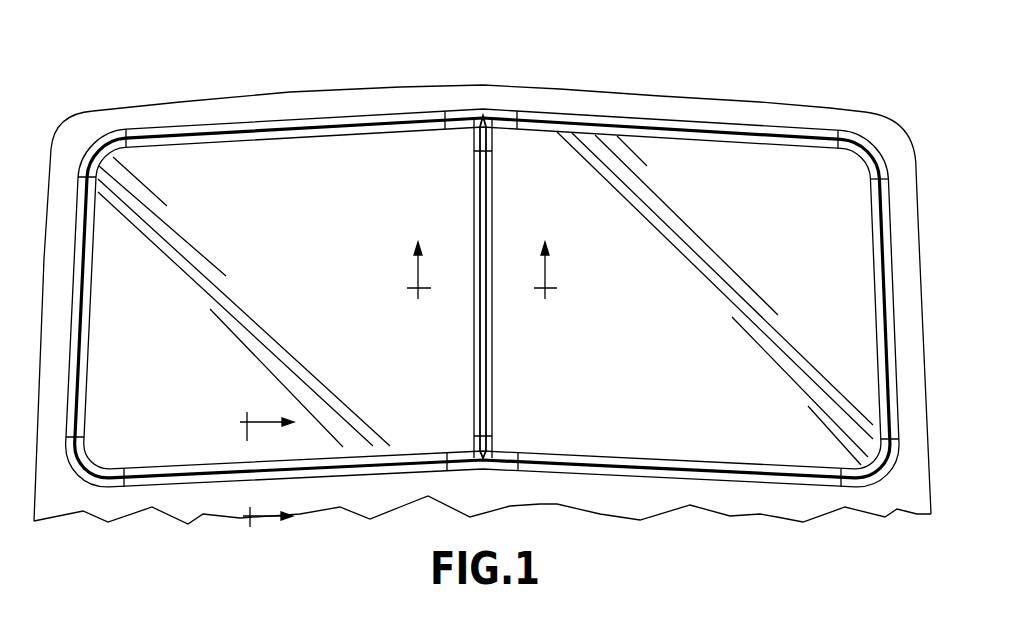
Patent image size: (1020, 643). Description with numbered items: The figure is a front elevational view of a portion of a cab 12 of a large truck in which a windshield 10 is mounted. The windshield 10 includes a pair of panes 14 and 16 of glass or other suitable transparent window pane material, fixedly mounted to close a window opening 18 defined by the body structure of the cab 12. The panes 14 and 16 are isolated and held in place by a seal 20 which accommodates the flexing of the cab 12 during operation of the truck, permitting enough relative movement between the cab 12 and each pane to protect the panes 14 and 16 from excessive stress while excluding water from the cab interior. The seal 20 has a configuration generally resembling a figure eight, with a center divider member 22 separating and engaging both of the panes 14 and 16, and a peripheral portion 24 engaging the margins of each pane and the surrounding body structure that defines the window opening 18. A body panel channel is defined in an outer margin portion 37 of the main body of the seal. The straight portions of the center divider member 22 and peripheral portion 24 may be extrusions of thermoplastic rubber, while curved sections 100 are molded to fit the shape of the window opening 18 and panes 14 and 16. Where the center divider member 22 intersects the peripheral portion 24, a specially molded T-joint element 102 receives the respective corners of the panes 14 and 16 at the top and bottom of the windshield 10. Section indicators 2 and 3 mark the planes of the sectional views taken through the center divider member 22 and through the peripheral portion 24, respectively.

The windshield 10 is at (482, 294).
The cab 12 is at (292, 92).
The pane 14 is at (301, 303).
The pane 16 is at (715, 257).
The window opening 18 is at (688, 163).
The seal 20 is at (557, 114).
The center divider member 22 is at (492, 358).
The peripheral portion 24 is at (618, 456).
The outer margin portion 37 is at (785, 489).
The curved sections 100 is at (866, 142).
The T-joint element 102 is at (493, 128).
The section line 2- 2 is at (482, 287).
The section line 3- 3 is at (256, 472).